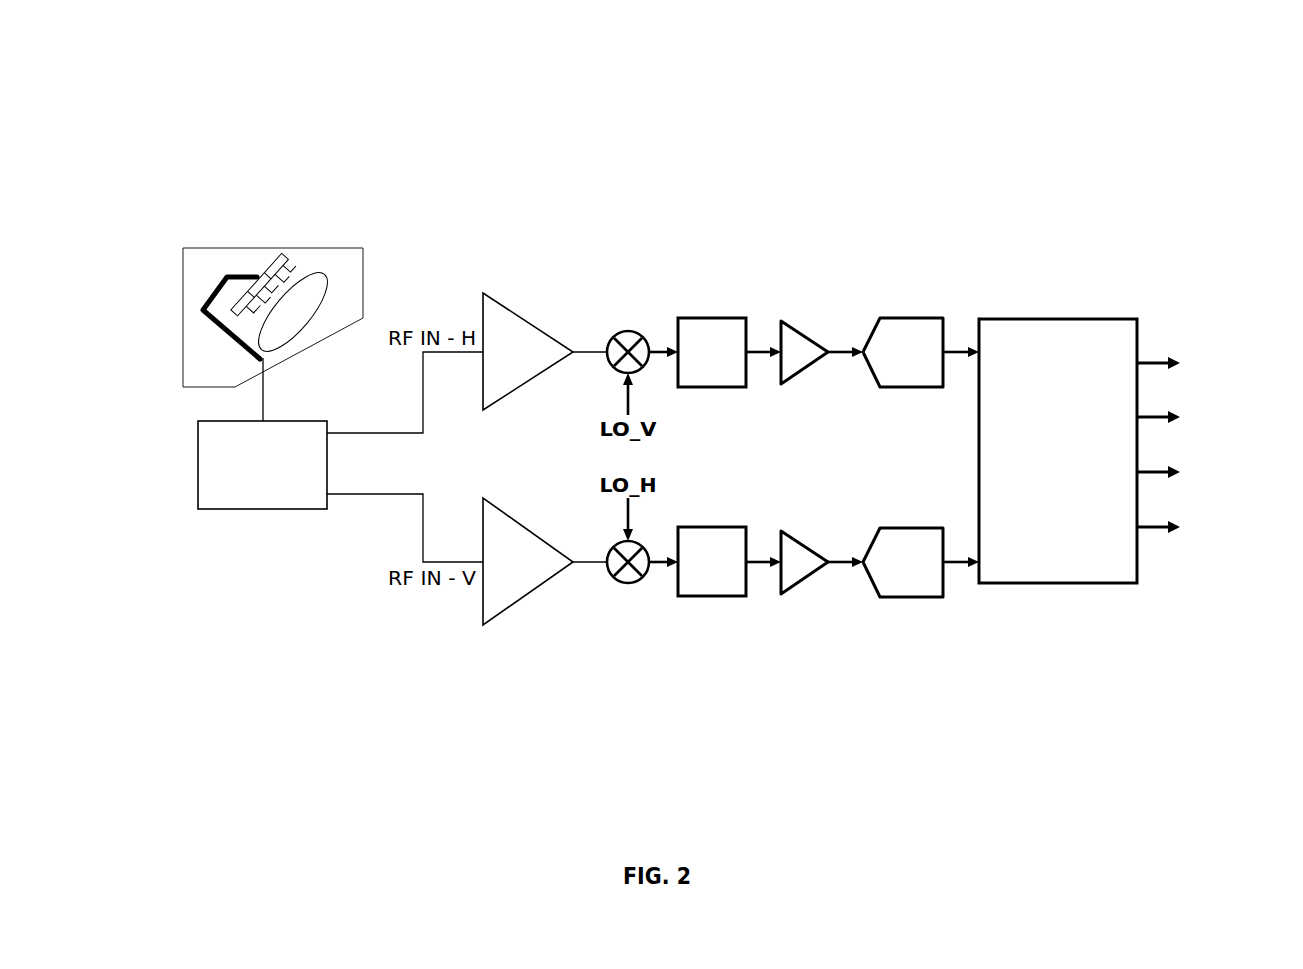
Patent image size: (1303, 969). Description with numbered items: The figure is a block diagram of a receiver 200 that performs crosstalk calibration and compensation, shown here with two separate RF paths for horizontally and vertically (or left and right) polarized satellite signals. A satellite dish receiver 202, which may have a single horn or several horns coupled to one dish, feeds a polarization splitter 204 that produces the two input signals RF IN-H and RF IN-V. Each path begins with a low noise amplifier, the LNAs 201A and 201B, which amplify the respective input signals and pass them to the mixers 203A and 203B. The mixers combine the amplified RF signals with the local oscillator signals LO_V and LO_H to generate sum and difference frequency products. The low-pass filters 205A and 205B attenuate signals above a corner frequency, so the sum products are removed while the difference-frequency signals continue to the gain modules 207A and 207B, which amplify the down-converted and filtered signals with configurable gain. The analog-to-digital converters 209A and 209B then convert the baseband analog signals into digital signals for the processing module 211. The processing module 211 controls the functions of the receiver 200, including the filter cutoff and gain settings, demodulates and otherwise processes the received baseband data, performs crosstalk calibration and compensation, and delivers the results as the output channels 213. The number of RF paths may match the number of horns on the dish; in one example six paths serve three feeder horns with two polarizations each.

The receiver 200 is at (228, 95).
The satellite dish receiver 202 is at (350, 248).
The polarization splitter 204 is at (245, 500).
The low noise amplifier 201A is at (487, 371).
The low noise amplifier 201B is at (487, 581).
The mixer 203A is at (629, 331).
The mixer 203B is at (630, 583).
The low-pass filter 205A is at (687, 375).
The low-pass filter 205B is at (687, 584).
The gain module 207A is at (814, 340).
The gain module 207B is at (806, 578).
The analog-to-digital converter 209A is at (885, 375).
The analog-to-digital converter 209B is at (885, 584).
The processing module 211 is at (1040, 473).
The output channels 213 is at (1245, 530).